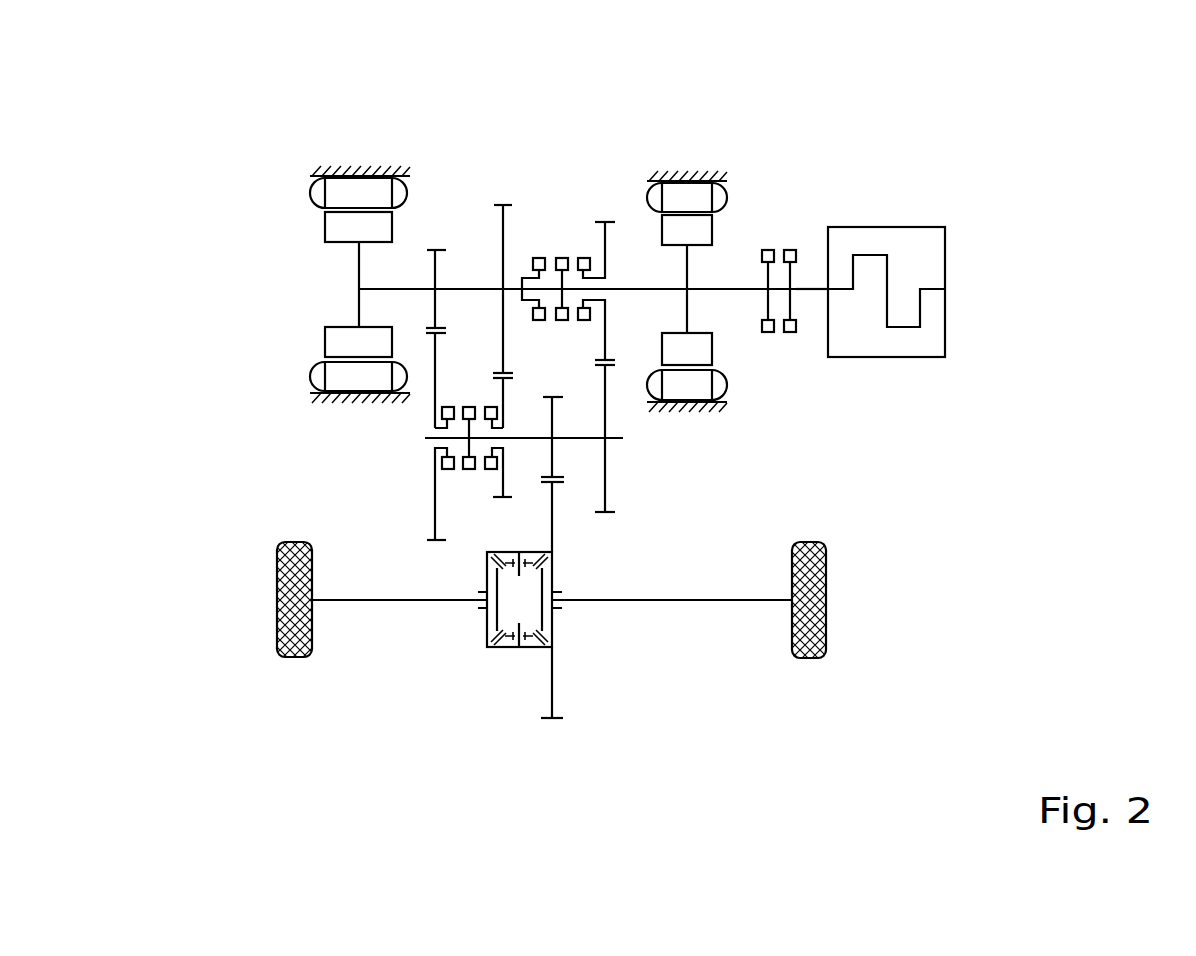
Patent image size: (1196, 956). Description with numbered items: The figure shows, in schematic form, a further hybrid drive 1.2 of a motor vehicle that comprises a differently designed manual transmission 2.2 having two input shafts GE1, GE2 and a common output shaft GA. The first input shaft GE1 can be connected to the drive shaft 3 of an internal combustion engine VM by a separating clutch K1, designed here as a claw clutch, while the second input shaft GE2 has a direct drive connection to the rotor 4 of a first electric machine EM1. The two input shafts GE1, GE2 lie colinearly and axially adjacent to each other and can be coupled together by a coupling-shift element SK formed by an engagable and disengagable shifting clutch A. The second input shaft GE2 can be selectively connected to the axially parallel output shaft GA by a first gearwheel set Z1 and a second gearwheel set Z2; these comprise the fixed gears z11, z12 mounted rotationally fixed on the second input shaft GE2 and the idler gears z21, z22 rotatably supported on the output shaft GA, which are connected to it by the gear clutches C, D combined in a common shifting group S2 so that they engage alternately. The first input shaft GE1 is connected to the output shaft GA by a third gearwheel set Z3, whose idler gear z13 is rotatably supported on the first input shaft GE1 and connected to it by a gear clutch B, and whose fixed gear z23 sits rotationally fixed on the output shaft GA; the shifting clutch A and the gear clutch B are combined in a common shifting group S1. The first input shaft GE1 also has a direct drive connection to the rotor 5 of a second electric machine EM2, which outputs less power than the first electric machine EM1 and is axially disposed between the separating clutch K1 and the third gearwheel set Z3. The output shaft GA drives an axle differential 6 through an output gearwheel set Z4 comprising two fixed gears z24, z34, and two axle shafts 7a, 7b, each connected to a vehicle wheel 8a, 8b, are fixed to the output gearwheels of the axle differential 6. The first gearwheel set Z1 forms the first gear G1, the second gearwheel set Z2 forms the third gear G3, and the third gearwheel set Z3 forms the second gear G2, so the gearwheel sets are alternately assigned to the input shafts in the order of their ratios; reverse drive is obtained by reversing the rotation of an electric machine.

The hybrid drive 1.2 is at (280, 140).
The manual transmission 2.2 is at (843, 138).
The drive shaft 3 is at (805, 288).
The rotor 4 is at (352, 227).
The rotor 5 is at (690, 350).
The axle differential 6 is at (505, 648).
The axle shaft 7a is at (362, 601).
The axle shaft 7b is at (655, 601).
The vehicle wheel 8a is at (293, 654).
The vehicle wheel 8b is at (800, 657).
The first electric machine EM1 is at (358, 148).
The second electric machine EM2 is at (687, 148).
The internal combustion engine VM is at (945, 275).
The separating clutch K1 is at (779, 270).
The first input shaft GE1 is at (735, 288).
The second input shaft GE2 is at (540, 288).
The output shaft GA is at (620, 440).
The first gear G1 is at (411, 413).
The second gear G2 is at (610, 413).
The third gear G3 is at (476, 414).
The first gearwheel set Z1 is at (411, 432).
The second gearwheel set Z2 is at (476, 432).
The third gearwheel set Z3 is at (610, 431).
The output gearwheel set Z4 is at (797, 605).
The fixed gear z11 is at (435, 249).
The idler gear z21 is at (430, 542).
The fixed gear z12 is at (510, 204).
The idler gear z22 is at (497, 499).
The idler gear z13 is at (605, 221).
The fixed gear z23 is at (603, 516).
The fixed gear z24 is at (545, 395).
The fixed gear z34 is at (552, 720).
The coupling-shift element SK is at (559, 210).
The shifting group S1 is at (556, 291).
The shifting group S2 is at (469, 437).
The shifting clutch A is at (535, 310).
The gear clutch B is at (584, 310).
The gear clutch C is at (452, 456).
The gear clutch D is at (487, 456).